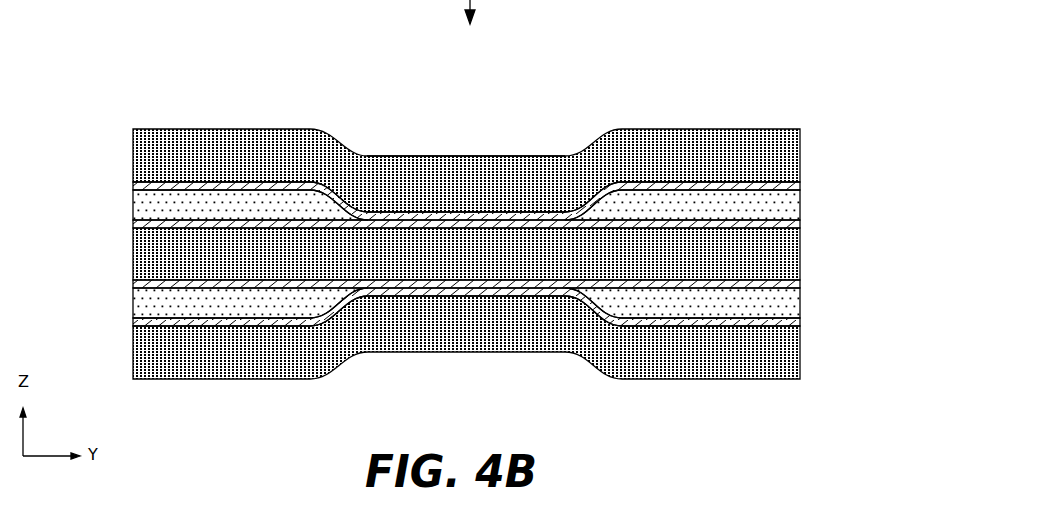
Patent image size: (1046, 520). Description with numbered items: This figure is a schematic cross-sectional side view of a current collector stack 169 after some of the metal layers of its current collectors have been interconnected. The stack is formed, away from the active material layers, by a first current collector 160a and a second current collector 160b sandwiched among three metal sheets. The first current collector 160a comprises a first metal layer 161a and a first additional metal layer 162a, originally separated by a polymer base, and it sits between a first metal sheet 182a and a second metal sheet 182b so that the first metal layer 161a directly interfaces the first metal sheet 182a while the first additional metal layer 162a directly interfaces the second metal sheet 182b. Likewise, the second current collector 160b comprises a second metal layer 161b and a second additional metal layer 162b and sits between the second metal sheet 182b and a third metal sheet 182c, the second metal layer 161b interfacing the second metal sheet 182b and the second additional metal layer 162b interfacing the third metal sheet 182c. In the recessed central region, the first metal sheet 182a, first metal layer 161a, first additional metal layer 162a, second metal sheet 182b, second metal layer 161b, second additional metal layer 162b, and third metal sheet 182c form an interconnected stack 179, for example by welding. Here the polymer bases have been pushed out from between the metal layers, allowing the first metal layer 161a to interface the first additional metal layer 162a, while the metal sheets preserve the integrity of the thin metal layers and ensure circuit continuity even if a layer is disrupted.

The current collector stack 169 is at (153, 85).
The interconnected stack 179 is at (422, 155).
The first metal sheet 182a is at (759, 142).
The first metal layer 161a is at (800, 185).
The first additional metal layer 162a is at (800, 222).
The first current collector 160a is at (481, 193).
The second metal sheet 182b is at (800, 262).
The second metal layer 161b is at (800, 283).
The second additional metal layer 162b is at (800, 320).
The second current collector 160b is at (482, 311).
The third metal sheet 182c is at (800, 358).